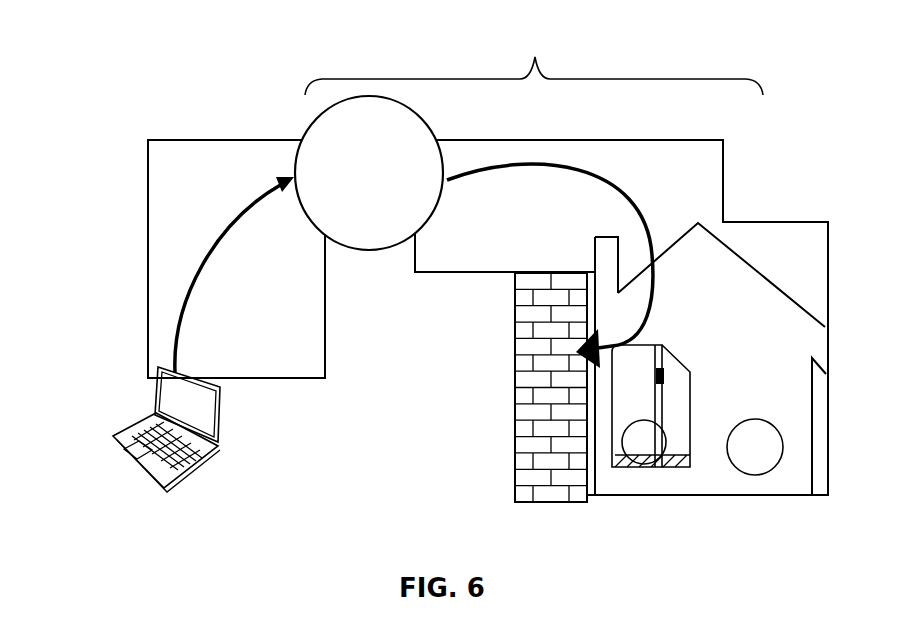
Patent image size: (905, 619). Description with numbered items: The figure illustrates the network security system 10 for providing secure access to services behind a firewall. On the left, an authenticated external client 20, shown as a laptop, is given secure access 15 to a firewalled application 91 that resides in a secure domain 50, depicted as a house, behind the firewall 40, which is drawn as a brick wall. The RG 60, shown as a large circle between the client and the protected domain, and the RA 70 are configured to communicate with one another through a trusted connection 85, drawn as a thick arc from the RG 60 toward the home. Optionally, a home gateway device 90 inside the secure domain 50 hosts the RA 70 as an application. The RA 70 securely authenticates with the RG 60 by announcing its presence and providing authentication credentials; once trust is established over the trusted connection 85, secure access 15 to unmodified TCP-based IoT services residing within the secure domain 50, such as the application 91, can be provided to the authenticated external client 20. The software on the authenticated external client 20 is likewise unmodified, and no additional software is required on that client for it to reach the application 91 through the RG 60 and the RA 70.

The network security system 10 is at (534, 58).
The secure access 15 is at (190, 274).
The authenticated external client 20 is at (136, 462).
The firewall 40 is at (513, 330).
The secure domain 50 is at (752, 260).
The RG 60 is at (428, 128).
The RA 70 is at (621, 440).
The trusted connection 85 is at (640, 213).
The home gateway device 90 is at (677, 445).
The application 91 is at (752, 475).